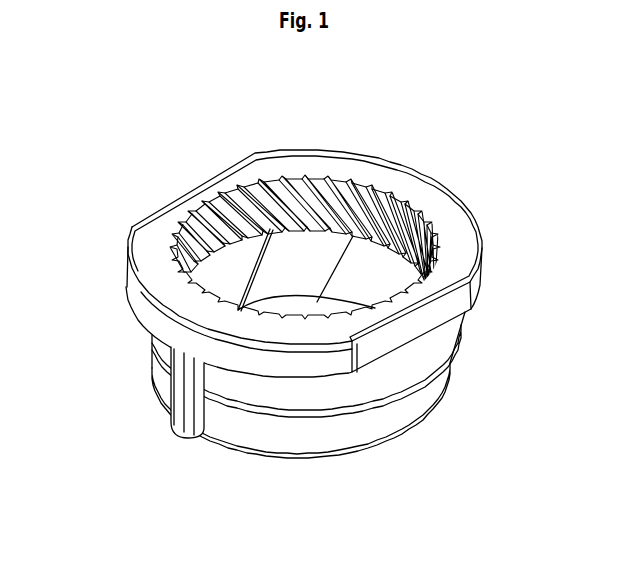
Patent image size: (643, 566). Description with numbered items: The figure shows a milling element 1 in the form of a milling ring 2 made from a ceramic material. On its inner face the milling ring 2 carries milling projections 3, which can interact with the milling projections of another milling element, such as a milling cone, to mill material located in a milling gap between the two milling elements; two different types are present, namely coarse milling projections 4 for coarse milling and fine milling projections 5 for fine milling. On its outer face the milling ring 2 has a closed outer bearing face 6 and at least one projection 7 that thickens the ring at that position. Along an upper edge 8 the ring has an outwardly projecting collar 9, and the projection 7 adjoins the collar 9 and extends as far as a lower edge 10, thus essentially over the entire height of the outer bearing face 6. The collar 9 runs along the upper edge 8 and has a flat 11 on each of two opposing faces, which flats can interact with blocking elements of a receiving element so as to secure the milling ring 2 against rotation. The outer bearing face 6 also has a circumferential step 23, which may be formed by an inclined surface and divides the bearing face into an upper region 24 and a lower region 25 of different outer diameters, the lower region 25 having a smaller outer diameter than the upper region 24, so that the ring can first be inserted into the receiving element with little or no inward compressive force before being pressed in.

The milling element 1 is at (311, 314).
The milling ring 2 is at (308, 437).
The milling projections 3 is at (410, 205).
The coarse milling projections 4 is at (276, 261).
The fine milling projections 5 is at (359, 258).
The outer bearing face 6 is at (250, 395).
The projection 7 is at (122, 454).
The upper edge 8 is at (174, 290).
The collar 9 is at (305, 147).
The lower edge 10 is at (286, 456).
The flat 11 is at (190, 188).
The circumferential step 23 is at (363, 412).
The upper region 24 is at (431, 349).
The lower region 25 is at (216, 424).